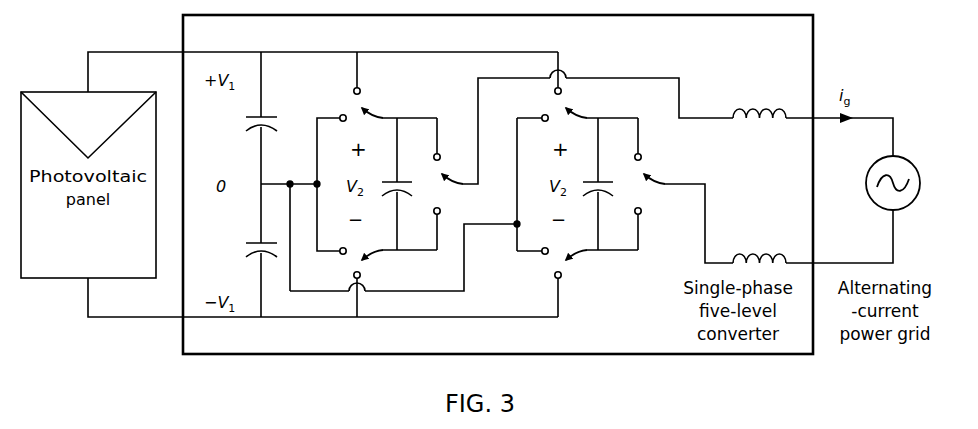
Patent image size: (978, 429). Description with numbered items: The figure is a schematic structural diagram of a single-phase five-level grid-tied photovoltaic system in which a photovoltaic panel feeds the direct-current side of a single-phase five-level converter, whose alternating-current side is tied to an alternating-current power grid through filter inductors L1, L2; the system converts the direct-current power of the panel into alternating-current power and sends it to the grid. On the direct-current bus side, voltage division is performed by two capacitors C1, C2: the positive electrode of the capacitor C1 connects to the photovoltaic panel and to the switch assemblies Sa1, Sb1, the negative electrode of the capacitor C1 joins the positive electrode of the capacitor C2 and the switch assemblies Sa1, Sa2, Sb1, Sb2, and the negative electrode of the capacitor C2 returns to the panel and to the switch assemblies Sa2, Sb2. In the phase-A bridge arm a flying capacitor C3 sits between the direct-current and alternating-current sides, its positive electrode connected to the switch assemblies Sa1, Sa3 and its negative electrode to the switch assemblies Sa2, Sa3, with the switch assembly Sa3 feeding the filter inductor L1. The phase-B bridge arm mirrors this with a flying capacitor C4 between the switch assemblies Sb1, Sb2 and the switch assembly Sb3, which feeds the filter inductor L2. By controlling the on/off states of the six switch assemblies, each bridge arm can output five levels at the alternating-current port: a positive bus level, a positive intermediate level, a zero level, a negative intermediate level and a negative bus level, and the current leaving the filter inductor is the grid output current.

The capacitor C1 is at (242, 118).
The capacitor C2 is at (242, 250).
The flying capacitor C3 is at (404, 184).
The flying capacitor C4 is at (605, 184).
The switch assembly Sa1 is at (375, 85).
The switch assembly Sa2 is at (376, 283).
The switch assembly Sa3 is at (452, 184).
The switch assembly Sb1 is at (580, 85).
The switch assembly Sb2 is at (582, 283).
The switch assembly Sb3 is at (660, 184).
The filter inductor L1 is at (759, 102).
The filter inductor L2 is at (759, 245).